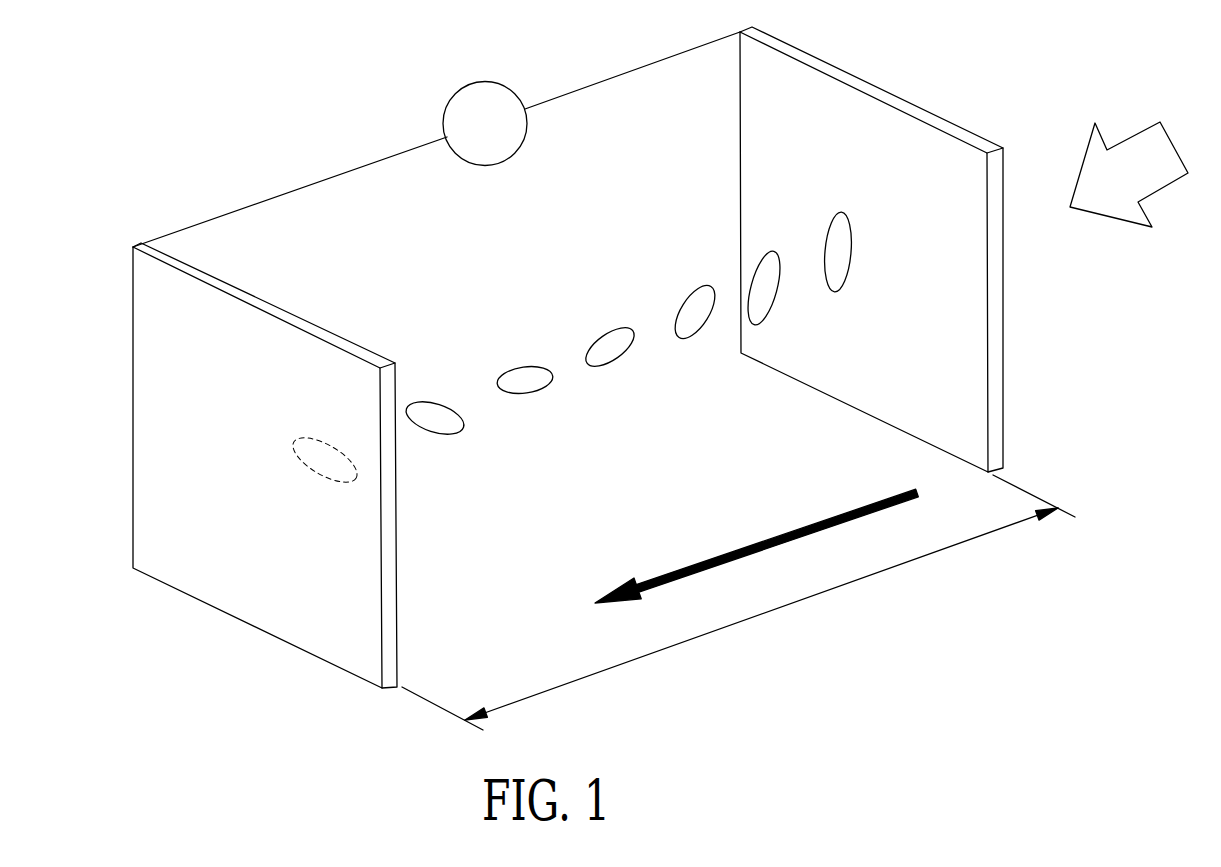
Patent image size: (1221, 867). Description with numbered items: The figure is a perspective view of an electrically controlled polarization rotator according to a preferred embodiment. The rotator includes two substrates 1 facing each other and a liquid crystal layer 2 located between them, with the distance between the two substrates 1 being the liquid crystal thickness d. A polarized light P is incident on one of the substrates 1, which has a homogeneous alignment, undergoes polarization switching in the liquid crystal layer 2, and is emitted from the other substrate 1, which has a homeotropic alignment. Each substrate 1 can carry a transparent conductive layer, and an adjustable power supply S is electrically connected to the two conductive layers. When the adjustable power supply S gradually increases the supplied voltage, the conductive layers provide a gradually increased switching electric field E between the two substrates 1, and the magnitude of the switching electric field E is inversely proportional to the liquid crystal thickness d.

The substrate 1 is at (148, 283).
The liquid crystal layer 2 is at (510, 455).
The adjustable power supply S is at (450, 103).
The switching electric field E is at (790, 530).
The liquid crystal thickness d is at (738, 602).
The polarized light P is at (1121, 137).